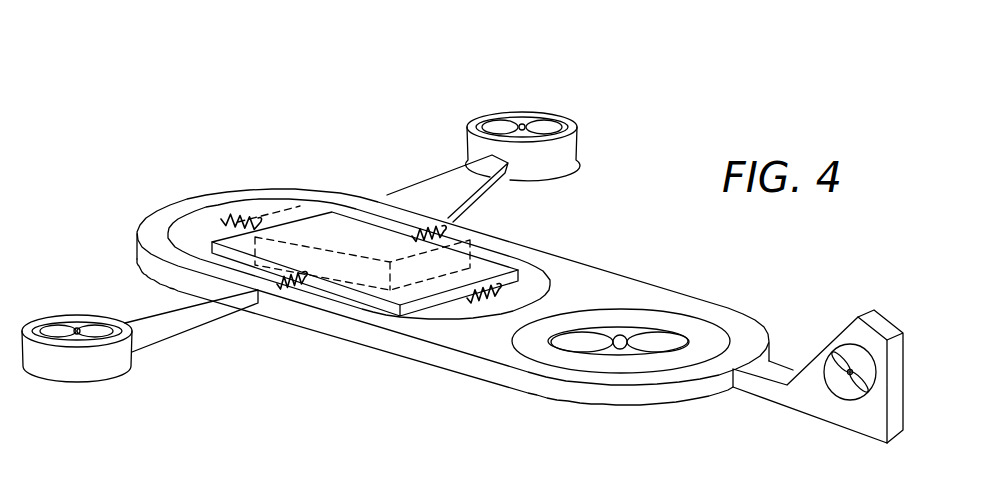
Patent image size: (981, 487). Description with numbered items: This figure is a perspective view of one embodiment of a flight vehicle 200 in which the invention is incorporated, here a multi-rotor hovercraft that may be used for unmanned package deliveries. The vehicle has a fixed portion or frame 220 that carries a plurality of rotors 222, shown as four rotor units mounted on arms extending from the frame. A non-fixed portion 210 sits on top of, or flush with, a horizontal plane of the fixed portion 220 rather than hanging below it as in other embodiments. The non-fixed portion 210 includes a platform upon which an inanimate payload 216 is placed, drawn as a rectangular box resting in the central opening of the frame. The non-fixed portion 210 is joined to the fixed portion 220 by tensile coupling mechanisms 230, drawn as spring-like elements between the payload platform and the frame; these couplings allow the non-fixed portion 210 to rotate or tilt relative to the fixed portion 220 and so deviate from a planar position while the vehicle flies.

The flight vehicle 200 is at (674, 115).
The non-fixed portion 210 is at (435, 298).
The inanimate payload 216 is at (303, 208).
The fixed portion or frame 220 is at (592, 270).
The rotors 222 is at (512, 108).
The tensile coupling mechanisms 230 is at (230, 218).